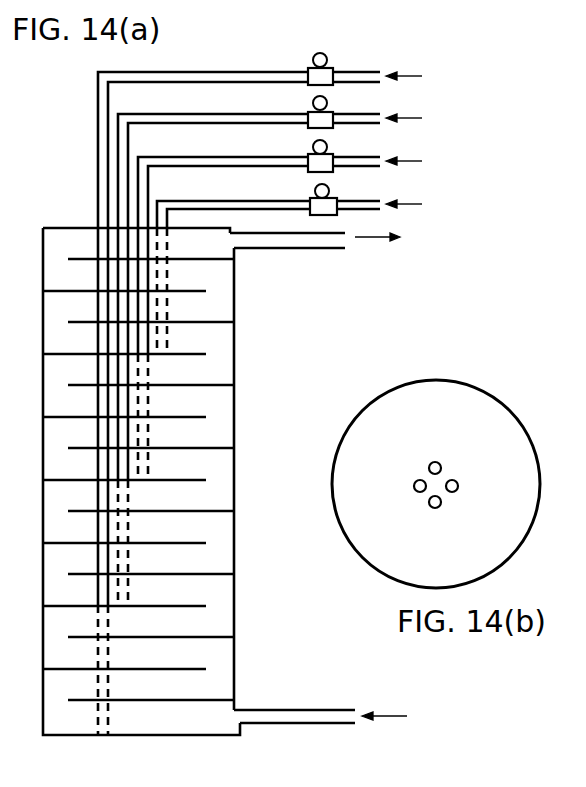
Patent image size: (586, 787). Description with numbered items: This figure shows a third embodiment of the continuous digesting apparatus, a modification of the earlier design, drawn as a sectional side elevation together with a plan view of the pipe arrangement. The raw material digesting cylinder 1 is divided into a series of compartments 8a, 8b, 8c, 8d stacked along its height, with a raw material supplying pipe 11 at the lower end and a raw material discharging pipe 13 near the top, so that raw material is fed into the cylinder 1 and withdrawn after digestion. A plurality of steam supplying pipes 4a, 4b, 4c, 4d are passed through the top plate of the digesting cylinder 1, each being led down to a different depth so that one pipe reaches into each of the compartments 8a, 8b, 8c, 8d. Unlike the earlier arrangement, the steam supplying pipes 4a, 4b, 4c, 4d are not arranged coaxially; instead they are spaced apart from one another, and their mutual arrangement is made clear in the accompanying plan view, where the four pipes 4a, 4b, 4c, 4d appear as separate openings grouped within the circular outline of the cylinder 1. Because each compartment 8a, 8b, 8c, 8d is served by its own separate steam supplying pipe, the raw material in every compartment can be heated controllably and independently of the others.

In FIG. 14A, the raw material digesting cylinder 1 is at (234, 467).
In FIG. 14B, the raw material digesting cylinder 1 is at (500, 397).
In FIG. 14A, the steam supplying pipe 4a is at (258, 190).
In FIG. 14B, the steam supplying pipe 4a is at (433, 462).
In FIG. 14A, the steam supplying pipe 4b is at (252, 144).
In FIG. 14B, the steam supplying pipe 4b is at (460, 486).
In FIG. 14A, the steam supplying pipe 4c is at (258, 100).
In FIG. 14B, the steam supplying pipe 4c is at (435, 510).
In FIG. 14A, the steam supplying pipe 4d is at (256, 69).
In FIG. 14B, the steam supplying pipe 4d is at (412, 486).
In FIG. 14A, the compartment 8a is at (218, 297).
In FIG. 14A, the compartment 8b is at (234, 420).
In FIG. 14A, the compartment 8c is at (222, 547).
In FIG. 14A, the compartment 8d is at (226, 665).
In FIG. 14A, the raw material supplying pipe 11 is at (325, 706).
In FIG. 14A, the raw material discharging pipe 13 is at (325, 249).